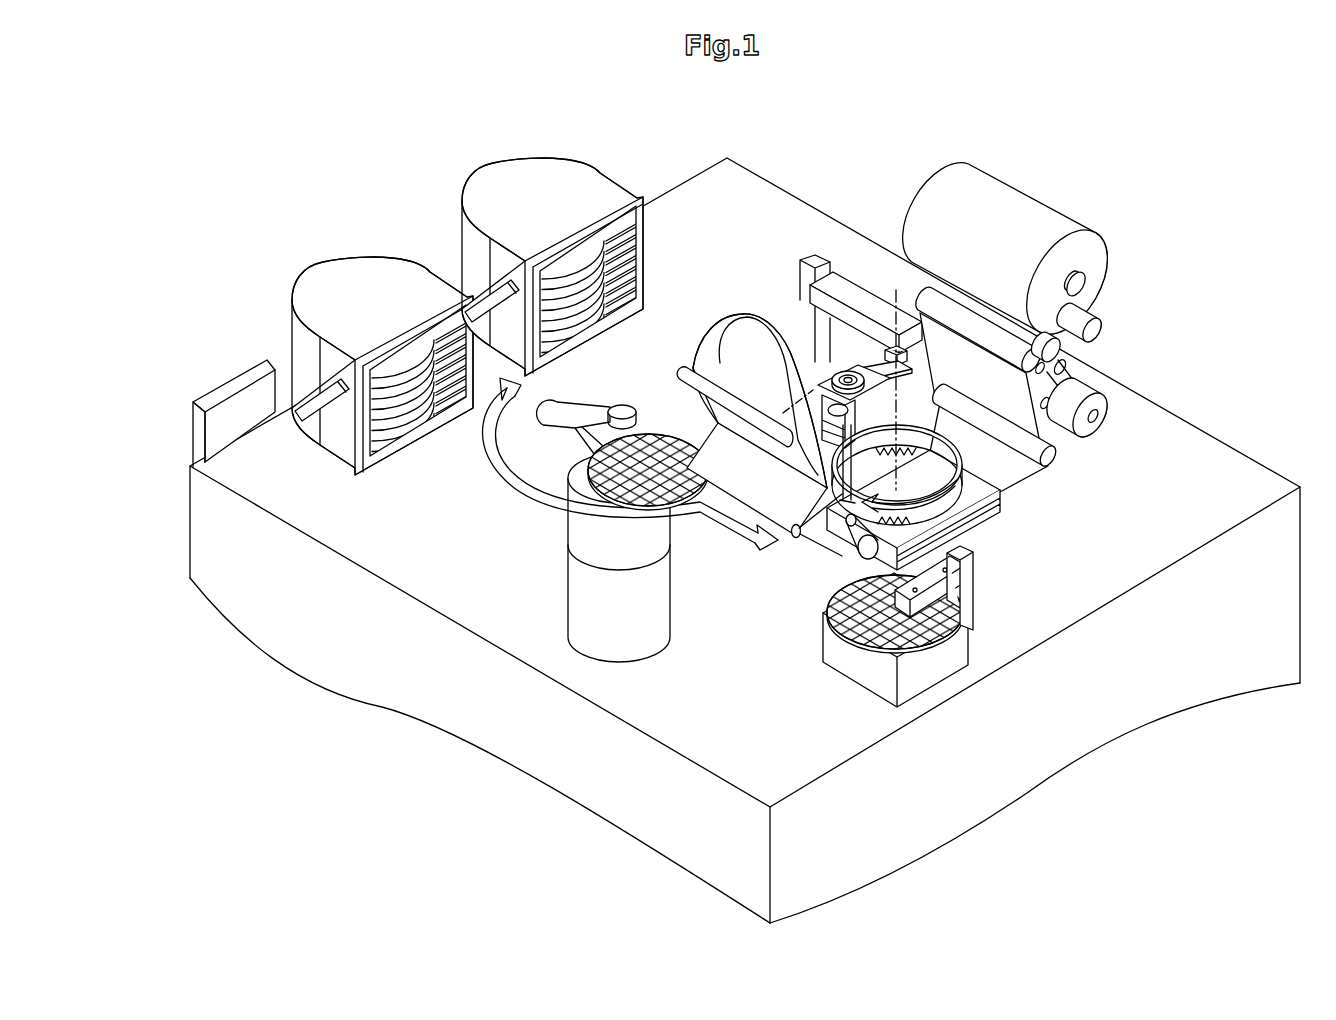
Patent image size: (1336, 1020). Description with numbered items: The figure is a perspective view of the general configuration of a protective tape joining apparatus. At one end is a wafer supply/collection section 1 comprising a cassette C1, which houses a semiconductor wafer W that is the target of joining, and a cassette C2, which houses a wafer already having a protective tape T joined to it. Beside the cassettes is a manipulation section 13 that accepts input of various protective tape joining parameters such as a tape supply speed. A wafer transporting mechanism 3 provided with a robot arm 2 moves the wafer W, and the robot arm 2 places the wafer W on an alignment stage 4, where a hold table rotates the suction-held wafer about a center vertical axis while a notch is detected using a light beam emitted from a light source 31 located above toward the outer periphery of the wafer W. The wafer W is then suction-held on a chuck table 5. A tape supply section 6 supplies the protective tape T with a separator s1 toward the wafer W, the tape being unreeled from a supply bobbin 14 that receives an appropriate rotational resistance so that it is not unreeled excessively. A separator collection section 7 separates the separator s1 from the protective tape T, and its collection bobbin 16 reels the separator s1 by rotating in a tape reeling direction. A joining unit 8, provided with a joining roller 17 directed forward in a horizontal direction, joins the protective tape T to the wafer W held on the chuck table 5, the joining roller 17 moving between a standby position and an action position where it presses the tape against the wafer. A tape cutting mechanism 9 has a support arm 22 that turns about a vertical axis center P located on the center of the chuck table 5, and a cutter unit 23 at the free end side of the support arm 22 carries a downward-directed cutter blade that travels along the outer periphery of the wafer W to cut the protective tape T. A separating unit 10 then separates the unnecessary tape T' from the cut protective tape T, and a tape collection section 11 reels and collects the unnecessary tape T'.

The wafer supply/collection section 1 is at (383, 186).
The cassette C1 is at (331, 274).
The cassette C2 is at (498, 177).
The semiconductor wafer W is at (427, 434).
The manipulation section 13 is at (215, 390).
The robot arm 2 is at (578, 446).
The wafer transporting mechanism 3 is at (500, 507).
The tape collection section 11 is at (719, 316).
The tape cutting mechanism 9 is at (815, 356).
The vertical axis center P is at (897, 377).
The support arm 22 is at (866, 372).
The cutter unit 23 is at (903, 399).
The tape supply section 6 is at (1064, 192).
The supply bobbin 14 is at (1095, 331).
The separator s1 is at (1100, 368).
The separator collection section 7 is at (1129, 399).
The collection bobbin 16 is at (1093, 418).
The joining roller 17 is at (1061, 476).
The protective tape T is at (989, 458).
The joining unit 8 is at (1060, 496).
The chuck table 5 is at (1000, 502).
The light source 31 is at (1001, 577).
The unnecessary tape T' is at (808, 540).
The separating unit 10 is at (845, 581).
The alignment stage 4 is at (851, 680).